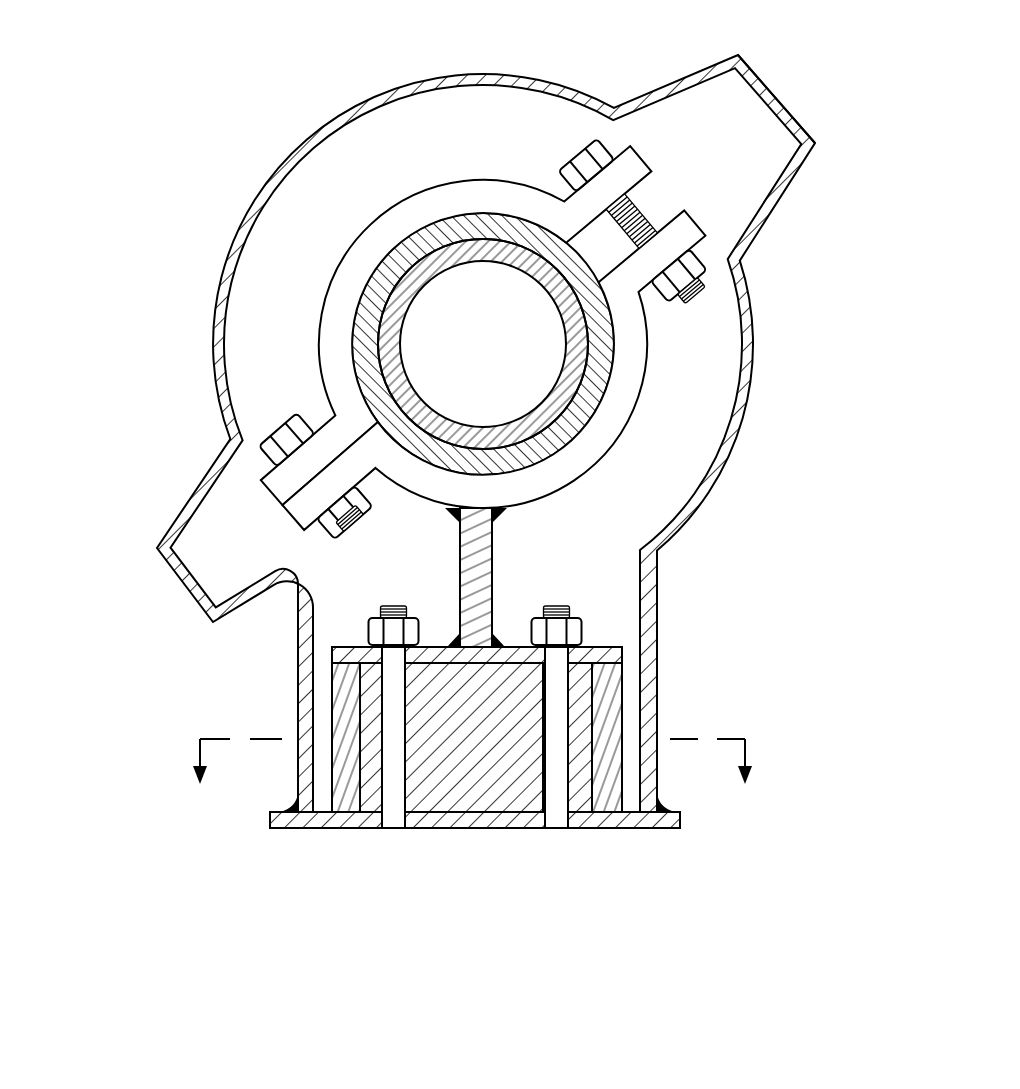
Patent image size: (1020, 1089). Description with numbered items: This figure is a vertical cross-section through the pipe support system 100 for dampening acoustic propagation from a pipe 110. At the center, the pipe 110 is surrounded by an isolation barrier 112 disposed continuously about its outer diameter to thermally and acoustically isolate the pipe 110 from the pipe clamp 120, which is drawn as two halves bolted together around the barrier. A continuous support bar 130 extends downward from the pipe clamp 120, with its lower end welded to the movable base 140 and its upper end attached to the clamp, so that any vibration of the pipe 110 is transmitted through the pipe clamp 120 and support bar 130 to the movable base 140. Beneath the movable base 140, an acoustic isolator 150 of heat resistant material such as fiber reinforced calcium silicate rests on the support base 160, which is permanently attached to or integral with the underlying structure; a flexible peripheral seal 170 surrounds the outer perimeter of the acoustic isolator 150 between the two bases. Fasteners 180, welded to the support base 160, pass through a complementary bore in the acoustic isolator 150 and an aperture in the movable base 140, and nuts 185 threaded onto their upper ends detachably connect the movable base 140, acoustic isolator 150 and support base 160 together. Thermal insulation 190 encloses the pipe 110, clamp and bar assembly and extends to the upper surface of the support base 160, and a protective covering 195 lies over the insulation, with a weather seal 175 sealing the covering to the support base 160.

The pipe support system 100 is at (148, 176).
The pipe 110 is at (566, 383).
The isolation barrier 112 is at (570, 434).
The pipe clamp 120 is at (484, 192).
The support bar 130 is at (472, 569).
The movable base 140 is at (613, 654).
The acoustic isolator 150 is at (510, 788).
The support base 160 is at (440, 817).
The flexible peripheral seal 170 is at (607, 682).
The weather seal 175 is at (292, 800).
The fastener 180 is at (557, 605).
The nut 185 is at (583, 627).
The thermal insulation 190 is at (750, 185).
The protective covering 195 is at (770, 98).